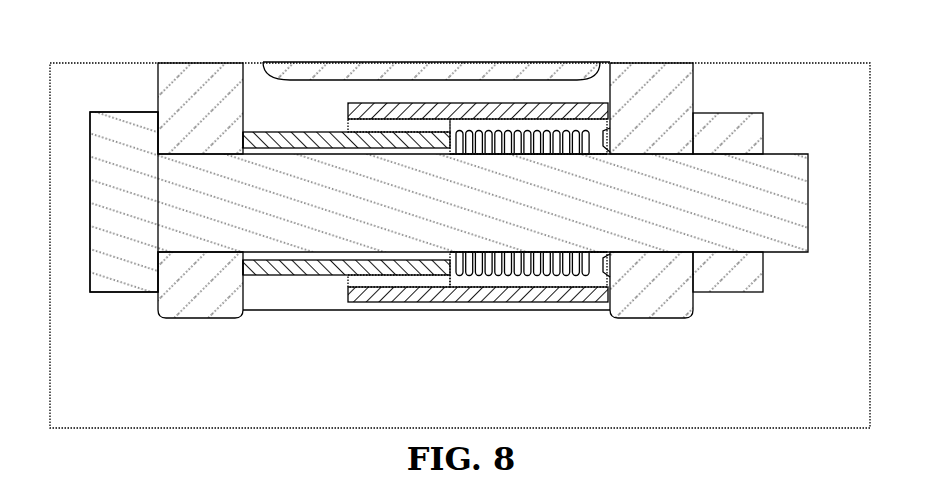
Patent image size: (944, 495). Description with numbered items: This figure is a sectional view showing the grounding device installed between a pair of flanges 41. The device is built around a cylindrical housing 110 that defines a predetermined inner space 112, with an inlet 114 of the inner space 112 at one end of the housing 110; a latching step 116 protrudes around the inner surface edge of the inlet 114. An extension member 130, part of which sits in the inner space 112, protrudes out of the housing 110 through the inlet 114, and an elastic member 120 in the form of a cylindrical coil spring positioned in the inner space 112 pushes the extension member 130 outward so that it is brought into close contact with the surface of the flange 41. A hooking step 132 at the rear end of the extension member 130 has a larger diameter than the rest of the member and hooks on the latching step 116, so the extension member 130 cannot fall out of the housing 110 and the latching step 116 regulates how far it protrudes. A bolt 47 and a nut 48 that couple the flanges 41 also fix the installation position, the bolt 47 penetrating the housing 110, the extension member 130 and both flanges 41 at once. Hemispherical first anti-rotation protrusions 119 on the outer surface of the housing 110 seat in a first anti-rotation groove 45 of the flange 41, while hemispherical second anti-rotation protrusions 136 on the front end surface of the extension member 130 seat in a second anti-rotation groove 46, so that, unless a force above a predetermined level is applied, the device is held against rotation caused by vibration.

The flange 41 is at (203, 312).
The first anti-rotation groove 45 is at (590, 165).
The second anti-rotation groove 46 is at (257, 155).
The bolt 47 is at (107, 279).
The nut 48 is at (763, 128).
The housing 110 is at (523, 304).
The inner space 112 is at (475, 284).
The inlet 114 is at (369, 118).
The latching step 116 is at (352, 131).
The first anti-rotation protrusion 119 is at (612, 124).
The elastic member 120 is at (570, 282).
The extension member 130 is at (273, 278).
The hooking step 132 is at (440, 126).
The second anti-rotation protrusion 136 is at (241, 147).